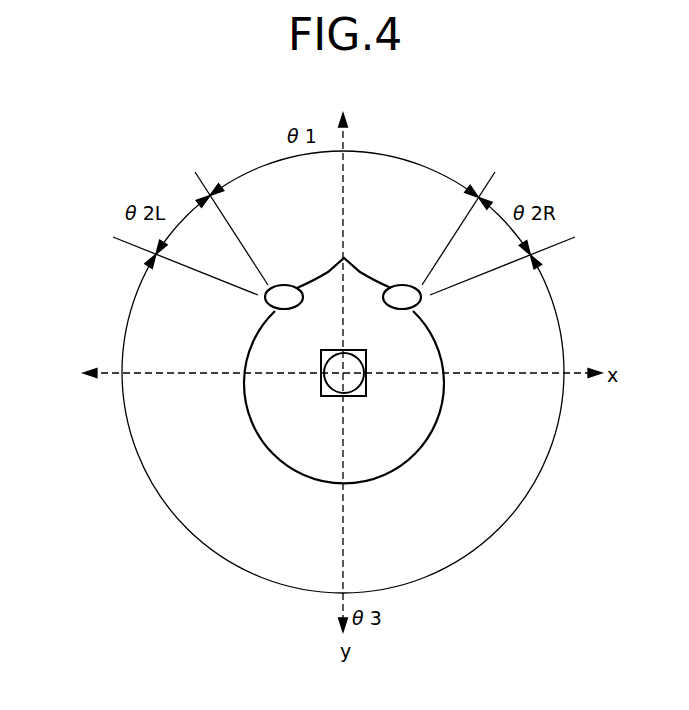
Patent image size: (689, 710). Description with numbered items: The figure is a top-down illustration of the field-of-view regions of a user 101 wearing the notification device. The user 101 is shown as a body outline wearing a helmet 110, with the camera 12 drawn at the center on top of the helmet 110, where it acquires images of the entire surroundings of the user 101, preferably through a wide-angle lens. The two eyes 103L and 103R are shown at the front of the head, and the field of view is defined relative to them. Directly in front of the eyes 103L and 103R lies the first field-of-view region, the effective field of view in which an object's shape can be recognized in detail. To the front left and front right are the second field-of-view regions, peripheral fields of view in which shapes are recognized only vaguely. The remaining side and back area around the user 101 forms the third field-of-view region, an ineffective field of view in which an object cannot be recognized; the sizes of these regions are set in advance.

The user 101 is at (426, 482).
The helmet 110 is at (422, 403).
The left eye 103L is at (282, 290).
The right eye 103R is at (403, 290).
The camera 12 is at (336, 392).